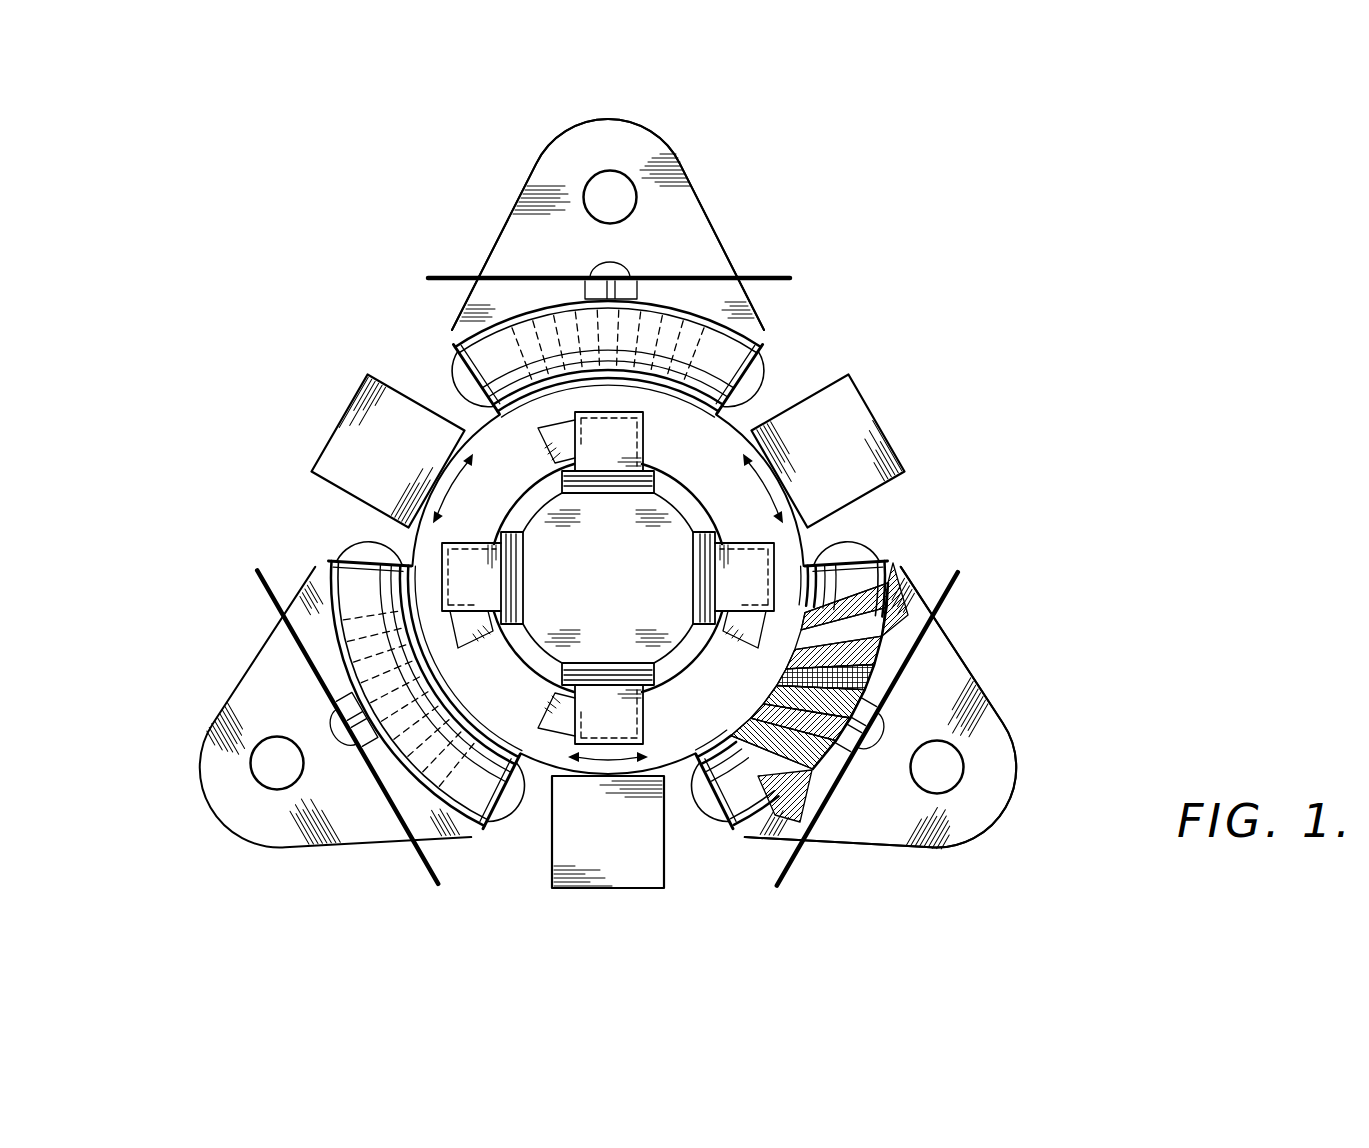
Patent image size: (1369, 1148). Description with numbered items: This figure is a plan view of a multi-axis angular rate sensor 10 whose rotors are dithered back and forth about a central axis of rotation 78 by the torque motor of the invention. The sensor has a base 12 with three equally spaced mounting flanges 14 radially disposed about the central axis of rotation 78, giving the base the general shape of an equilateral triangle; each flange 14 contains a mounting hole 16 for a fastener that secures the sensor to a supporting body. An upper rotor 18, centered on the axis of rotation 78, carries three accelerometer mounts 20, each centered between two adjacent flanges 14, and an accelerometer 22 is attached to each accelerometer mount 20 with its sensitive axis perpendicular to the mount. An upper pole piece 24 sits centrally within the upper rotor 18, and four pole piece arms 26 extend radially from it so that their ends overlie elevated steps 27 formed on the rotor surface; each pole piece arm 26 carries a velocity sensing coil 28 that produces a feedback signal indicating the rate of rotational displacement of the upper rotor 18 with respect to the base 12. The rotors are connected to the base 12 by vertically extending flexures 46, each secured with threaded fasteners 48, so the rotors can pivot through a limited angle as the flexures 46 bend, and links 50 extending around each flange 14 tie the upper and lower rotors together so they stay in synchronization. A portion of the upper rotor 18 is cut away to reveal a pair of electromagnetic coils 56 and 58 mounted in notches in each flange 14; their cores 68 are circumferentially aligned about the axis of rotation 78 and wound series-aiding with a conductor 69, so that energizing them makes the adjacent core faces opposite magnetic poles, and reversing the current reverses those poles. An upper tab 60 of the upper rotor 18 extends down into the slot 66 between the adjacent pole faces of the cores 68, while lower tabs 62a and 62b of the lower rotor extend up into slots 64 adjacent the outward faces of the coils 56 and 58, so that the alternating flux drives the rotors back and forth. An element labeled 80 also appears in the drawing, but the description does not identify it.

The rate sensor 10 is at (190, 823).
The base 12 is at (192, 680).
The mounting flanges 14 is at (506, 220).
The mounting hole 16 is at (588, 182).
The upper rotor 18 is at (480, 427).
The accelerometer mounts 20 is at (307, 456).
The accelerometer 22 is at (353, 468).
The upper pole piece 24 is at (632, 608).
The pole piece arms 26 is at (645, 452).
The elevated steps 27 is at (562, 455).
The velocity sensing coil 28 is at (517, 530).
The flexures 46 is at (457, 347).
The threaded fasteners 48 is at (627, 268).
The links 50 is at (763, 277).
The electromagnetic coil 56 is at (750, 691).
The electromagnetic coil 58 is at (790, 635).
The upper tab 60 is at (868, 715).
The lower tab 62a is at (776, 838).
The lower tab 62b is at (908, 608).
The slots 64 is at (865, 655).
The slot 66 is at (953, 730).
The cores 68 is at (855, 695).
The conductor 69 is at (900, 700).
The central axis of rotation 78 is at (608, 576).
The clamp 80 is at (673, 277).